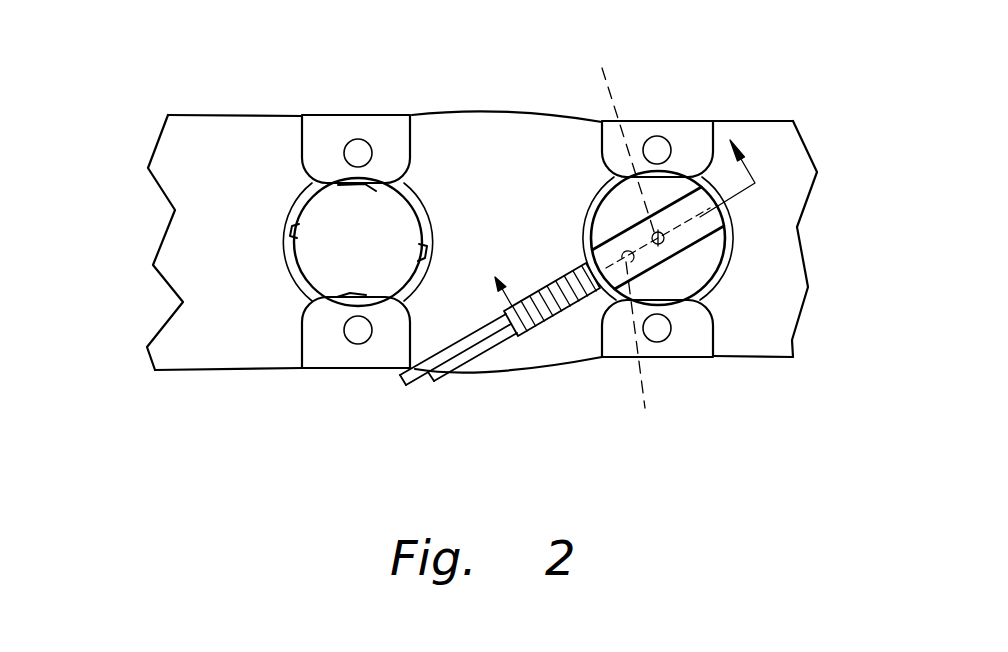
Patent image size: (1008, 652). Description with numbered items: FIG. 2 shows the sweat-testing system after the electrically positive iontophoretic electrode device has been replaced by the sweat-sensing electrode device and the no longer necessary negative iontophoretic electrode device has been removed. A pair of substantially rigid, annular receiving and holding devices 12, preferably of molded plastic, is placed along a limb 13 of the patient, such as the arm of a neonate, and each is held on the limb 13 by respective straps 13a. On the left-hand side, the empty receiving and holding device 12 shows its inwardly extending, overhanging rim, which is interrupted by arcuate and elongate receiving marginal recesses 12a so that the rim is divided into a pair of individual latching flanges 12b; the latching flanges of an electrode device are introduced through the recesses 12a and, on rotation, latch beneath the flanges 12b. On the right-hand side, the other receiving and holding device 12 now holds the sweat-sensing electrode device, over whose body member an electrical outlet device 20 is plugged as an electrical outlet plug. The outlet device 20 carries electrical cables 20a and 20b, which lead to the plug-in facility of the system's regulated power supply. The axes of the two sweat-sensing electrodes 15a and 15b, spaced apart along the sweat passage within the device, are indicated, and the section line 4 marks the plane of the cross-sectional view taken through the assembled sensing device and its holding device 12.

The section line 4 is at (617, 217).
The receiving and holding device 12 is at (283, 225).
The receiving marginal recess 12a is at (312, 272).
The latching flange 12b is at (320, 195).
The limb 13 is at (528, 132).
The strap 13a is at (332, 135).
The sweat-sensing electrode 15a is at (616, 138).
The sweat-sensing electrode 15b is at (649, 353).
The electrical outlet device 20 is at (698, 265).
The electrical cable 20a is at (406, 387).
The electrical cable 20b is at (450, 374).